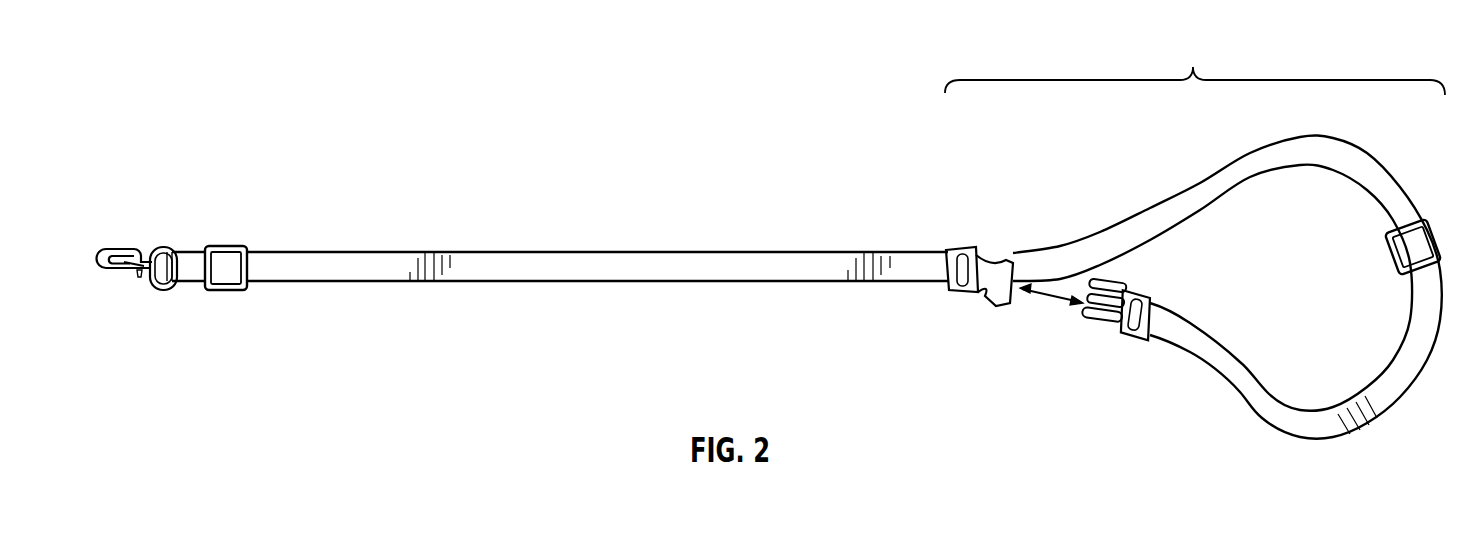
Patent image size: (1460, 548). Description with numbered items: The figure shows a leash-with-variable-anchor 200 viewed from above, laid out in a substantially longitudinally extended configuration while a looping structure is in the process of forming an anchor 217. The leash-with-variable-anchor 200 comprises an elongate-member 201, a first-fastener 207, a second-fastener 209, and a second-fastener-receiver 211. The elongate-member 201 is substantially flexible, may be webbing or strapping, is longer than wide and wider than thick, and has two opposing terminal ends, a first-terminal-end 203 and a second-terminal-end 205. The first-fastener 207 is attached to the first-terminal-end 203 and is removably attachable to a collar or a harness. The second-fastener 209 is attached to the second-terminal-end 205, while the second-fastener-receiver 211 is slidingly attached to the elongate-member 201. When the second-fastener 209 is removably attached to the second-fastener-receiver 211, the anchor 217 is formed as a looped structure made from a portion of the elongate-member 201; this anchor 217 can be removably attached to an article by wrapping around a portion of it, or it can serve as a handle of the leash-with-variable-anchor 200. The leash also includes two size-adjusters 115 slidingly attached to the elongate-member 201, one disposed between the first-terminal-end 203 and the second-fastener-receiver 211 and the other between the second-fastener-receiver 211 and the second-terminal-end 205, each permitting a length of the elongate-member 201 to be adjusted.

The leash-with-variable-anchor 200 is at (764, 116).
The elongate-member 201 is at (533, 251).
The first-terminal-end 203 is at (166, 266).
The second-terminal-end 205 is at (1144, 322).
The first-fastener 207 is at (113, 274).
The second-fastener 209 is at (1127, 337).
The second-fastener-receiver 211 is at (996, 306).
The size-adjuster 115 is at (223, 246).
The anchor 217 is at (1195, 62).